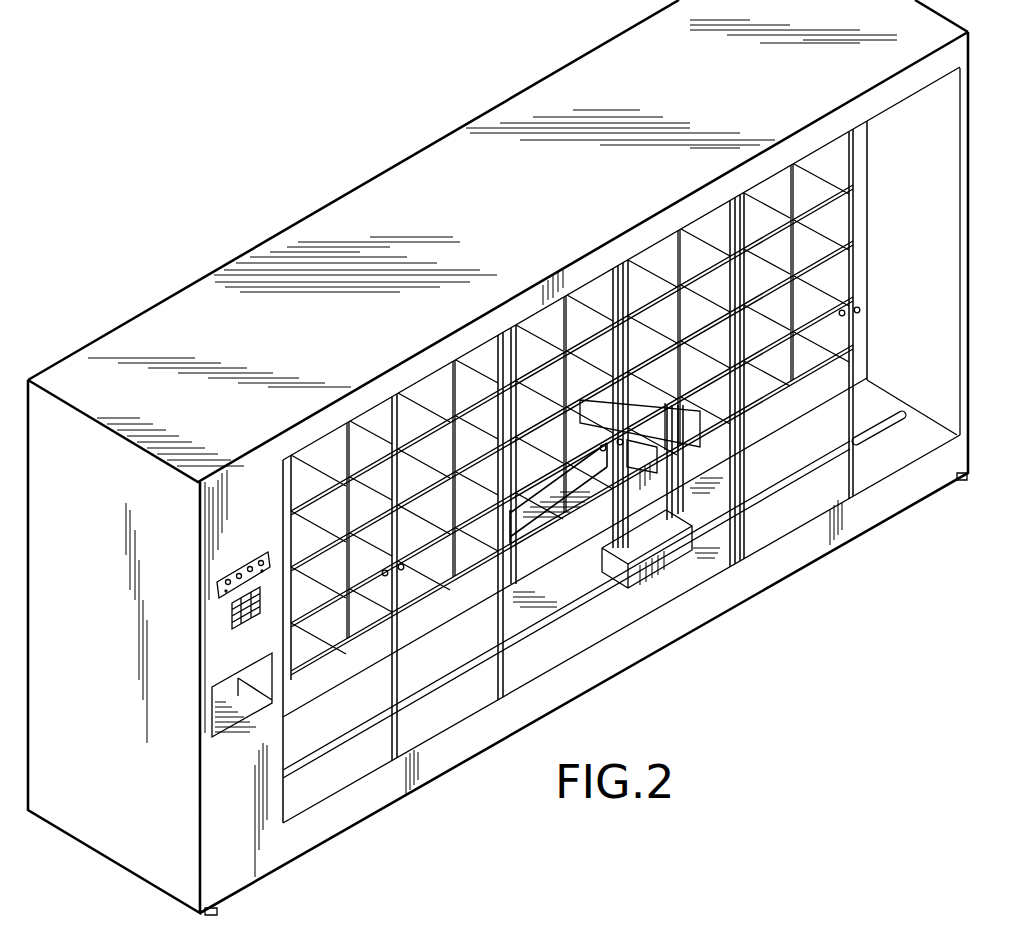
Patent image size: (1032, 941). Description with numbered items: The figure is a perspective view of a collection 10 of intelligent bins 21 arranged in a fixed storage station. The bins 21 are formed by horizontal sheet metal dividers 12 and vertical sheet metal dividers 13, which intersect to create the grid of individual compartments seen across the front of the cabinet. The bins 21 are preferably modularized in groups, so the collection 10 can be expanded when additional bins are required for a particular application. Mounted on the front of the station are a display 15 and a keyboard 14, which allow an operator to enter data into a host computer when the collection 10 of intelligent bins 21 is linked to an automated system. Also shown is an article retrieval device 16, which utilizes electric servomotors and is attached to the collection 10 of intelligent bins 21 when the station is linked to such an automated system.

The collection of intelligent bins 10 is at (400, 121).
The horizontal sheet metal dividers 12 is at (822, 213).
The vertical sheet metal dividers 13 is at (790, 250).
The keyboard 14 is at (232, 617).
The display 15 is at (218, 589).
The article retrieval device 16 is at (680, 471).
The intelligent bins 21 is at (830, 173).